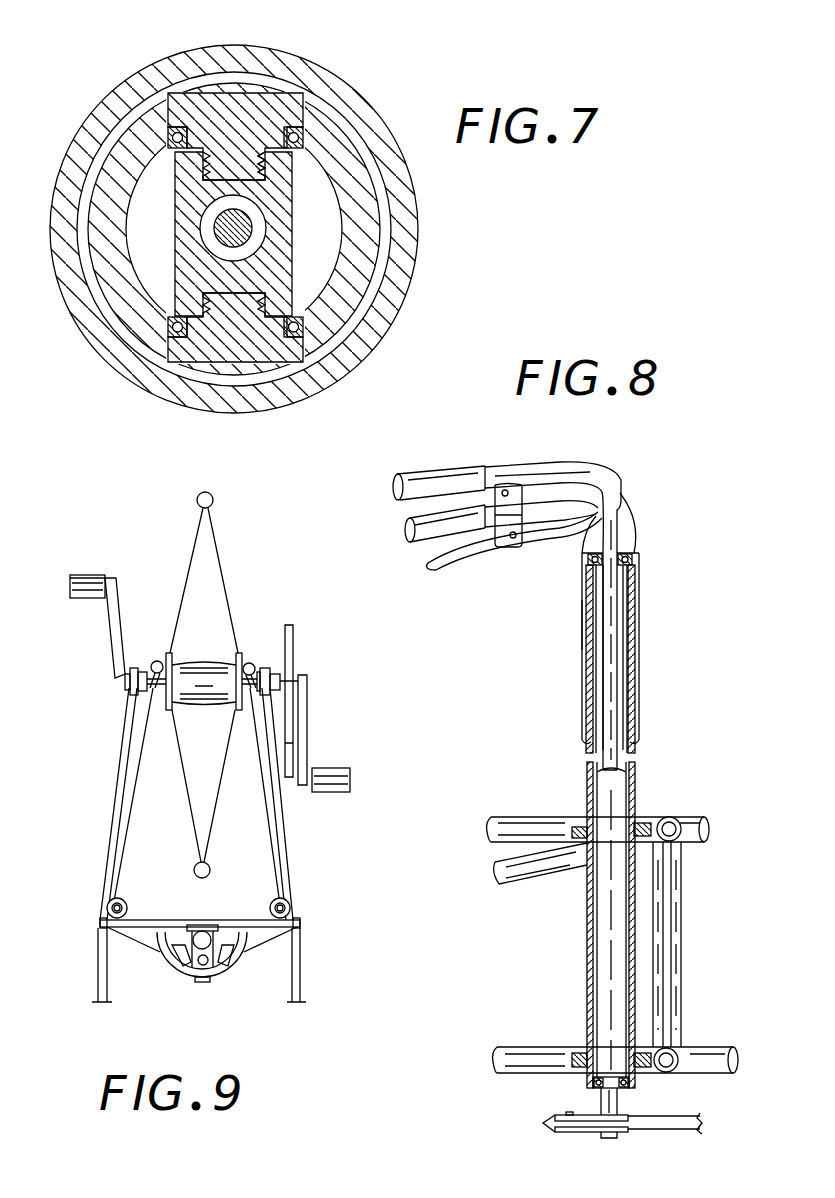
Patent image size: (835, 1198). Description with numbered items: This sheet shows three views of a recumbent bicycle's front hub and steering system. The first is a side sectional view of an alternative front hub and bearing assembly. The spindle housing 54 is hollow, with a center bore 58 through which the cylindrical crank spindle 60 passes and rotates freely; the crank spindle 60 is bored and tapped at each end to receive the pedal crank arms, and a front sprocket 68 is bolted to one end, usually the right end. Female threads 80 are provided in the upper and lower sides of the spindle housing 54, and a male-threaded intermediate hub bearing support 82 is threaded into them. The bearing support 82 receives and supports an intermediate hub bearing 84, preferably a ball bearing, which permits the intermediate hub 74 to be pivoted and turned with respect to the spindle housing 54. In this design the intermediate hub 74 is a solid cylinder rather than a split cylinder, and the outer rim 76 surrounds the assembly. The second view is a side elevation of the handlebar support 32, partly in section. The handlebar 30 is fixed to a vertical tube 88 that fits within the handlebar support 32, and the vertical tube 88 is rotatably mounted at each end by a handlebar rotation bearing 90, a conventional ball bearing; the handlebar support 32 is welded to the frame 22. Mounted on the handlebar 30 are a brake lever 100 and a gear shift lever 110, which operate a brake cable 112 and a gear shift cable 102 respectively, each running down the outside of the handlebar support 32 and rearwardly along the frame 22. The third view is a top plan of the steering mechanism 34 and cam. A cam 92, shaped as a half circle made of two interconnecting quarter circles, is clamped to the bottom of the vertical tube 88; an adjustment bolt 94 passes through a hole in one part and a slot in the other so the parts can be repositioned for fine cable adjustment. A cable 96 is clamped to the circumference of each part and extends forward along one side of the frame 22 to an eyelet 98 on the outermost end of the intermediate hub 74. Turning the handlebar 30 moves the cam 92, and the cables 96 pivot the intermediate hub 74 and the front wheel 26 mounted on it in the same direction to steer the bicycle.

In FIG. 8, the frame 22 is at (516, 817).
In FIG. 9, the front wheel 26 is at (214, 500).
In FIG. 8, the handlebar 30 is at (500, 486).
In FIG. 8, the handlebar support 32 is at (588, 774).
In FIG. 8, the steering mechanism 34 is at (602, 1131).
In FIG. 9, the steering mechanism 34 is at (202, 978).
In FIG. 7, the spindle housing 54 is at (177, 225).
In FIG. 7, the center bore 58 is at (254, 238).
In FIG. 7, the crank spindle 60 is at (250, 222).
In FIG. 7, the front sprocket 68 is at (290, 345).
In FIG. 7, the intermediate hub 74 is at (345, 312).
In FIG. 9, the intermediate hub 74 is at (163, 700).
In FIG. 7, the outer rim 76 is at (76, 153).
In FIG. 7, the female threads 80 is at (262, 160).
In FIG. 7, the intermediate hub bearing support 82 is at (250, 93).
In FIG. 7, the intermediate hub bearing 84 is at (172, 148).
In FIG. 8, the vertical tube 88 is at (594, 676).
In FIG. 8, the handlebar rotation bearing 90 is at (634, 553).
In FIG. 8, the cam 92 is at (544, 1123).
In FIG. 9, the cam 92 is at (160, 949).
In FIG. 8, the adjustment bolt 94 is at (568, 1112).
In FIG. 9, the adjustment bolt 94 is at (200, 966).
In FIG. 8, the cable 96 is at (653, 1130).
In FIG. 9, the cable 96 is at (244, 950).
In FIG. 9, the eyelet 98 is at (158, 661).
In FIG. 8, the brake lever 100 is at (418, 508).
In FIG. 8, the gear shift cable 102 is at (641, 648).
In FIG. 8, the gear shift lever 110 is at (440, 562).
In FIG. 8, the brake cable 112 is at (583, 626).